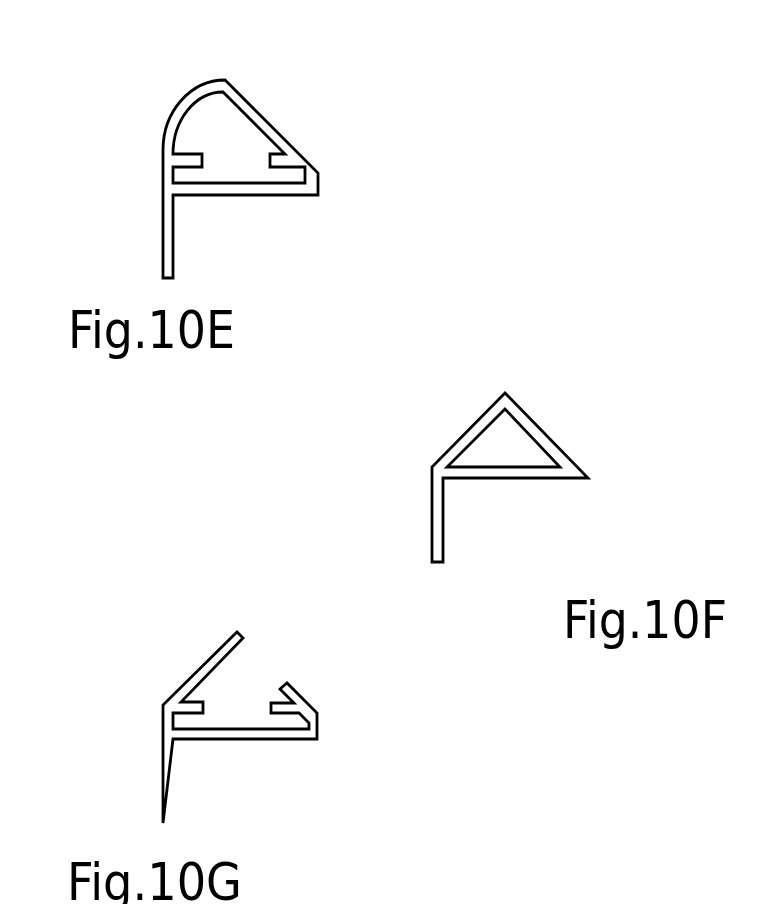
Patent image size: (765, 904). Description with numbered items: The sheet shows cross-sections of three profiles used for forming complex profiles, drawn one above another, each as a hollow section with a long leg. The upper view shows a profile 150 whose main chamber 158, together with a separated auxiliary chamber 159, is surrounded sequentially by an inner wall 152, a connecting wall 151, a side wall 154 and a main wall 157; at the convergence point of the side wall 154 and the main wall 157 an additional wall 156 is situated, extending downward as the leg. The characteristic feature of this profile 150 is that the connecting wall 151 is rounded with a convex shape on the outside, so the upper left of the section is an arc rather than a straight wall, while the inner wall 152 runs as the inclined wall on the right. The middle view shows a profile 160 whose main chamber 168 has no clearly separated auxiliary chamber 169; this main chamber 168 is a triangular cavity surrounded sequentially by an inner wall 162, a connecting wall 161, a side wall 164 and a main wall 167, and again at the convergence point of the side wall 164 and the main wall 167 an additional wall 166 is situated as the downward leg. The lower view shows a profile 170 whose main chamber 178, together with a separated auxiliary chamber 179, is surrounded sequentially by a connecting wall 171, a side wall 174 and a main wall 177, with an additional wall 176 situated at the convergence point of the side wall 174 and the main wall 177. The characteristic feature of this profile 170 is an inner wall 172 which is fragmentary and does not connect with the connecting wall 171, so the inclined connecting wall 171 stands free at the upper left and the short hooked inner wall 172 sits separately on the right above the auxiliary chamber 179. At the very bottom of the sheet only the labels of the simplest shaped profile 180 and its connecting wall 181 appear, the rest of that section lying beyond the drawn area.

In FIG. 10E, the profile 150 is at (275, 122).
In FIG. 10E, the connecting wall 151 is at (167, 124).
In FIG. 10E, the inner wall 152 is at (243, 104).
In FIG. 10E, the side wall 154 is at (162, 175).
In FIG. 10E, the additional wall 156 is at (167, 240).
In FIG. 10E, the main wall 157 is at (262, 190).
In FIG. 10E, the main chamber 158 is at (257, 146).
In FIG. 10E, the auxiliary chamber 159 is at (283, 177).
In FIG. 10F, the profile 160 is at (533, 418).
In FIG. 10F, the connecting wall 161 is at (457, 442).
In FIG. 10F, the inner wall 162 is at (513, 406).
In FIG. 10F, the side wall 164 is at (432, 485).
In FIG. 10F, the additional wall 166 is at (437, 523).
In FIG. 10F, the main wall 167 is at (528, 475).
In FIG. 10F, the main chamber 168 is at (508, 445).
In FIG. 10F, the auxiliary chamber 169 is at (538, 461).
In FIG. 10G, the profile 170 is at (222, 666).
In FIG. 10G, the connecting wall 171 is at (198, 670).
In FIG. 10G, the inner wall 172 is at (290, 687).
In FIG. 10G, the side wall 174 is at (162, 718).
In FIG. 10G, the additional wall 176 is at (167, 784).
In FIG. 10G, the main wall 177 is at (260, 733).
In FIG. 10G, the main chamber 178 is at (260, 696).
In FIG. 10G, the auxiliary chamber 179 is at (282, 722).
In FIG. 10G, the profile 180 is at (597, 900).
In FIG. 10G, the connecting wall 181 is at (390, 903).